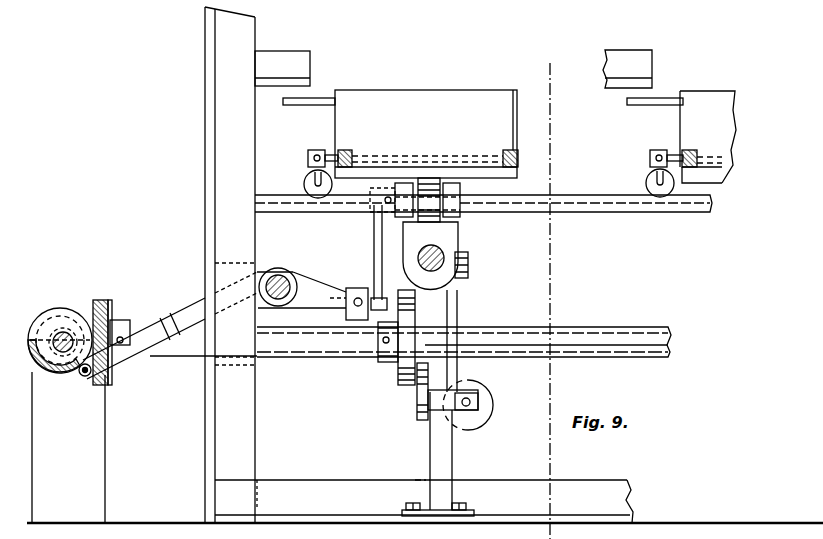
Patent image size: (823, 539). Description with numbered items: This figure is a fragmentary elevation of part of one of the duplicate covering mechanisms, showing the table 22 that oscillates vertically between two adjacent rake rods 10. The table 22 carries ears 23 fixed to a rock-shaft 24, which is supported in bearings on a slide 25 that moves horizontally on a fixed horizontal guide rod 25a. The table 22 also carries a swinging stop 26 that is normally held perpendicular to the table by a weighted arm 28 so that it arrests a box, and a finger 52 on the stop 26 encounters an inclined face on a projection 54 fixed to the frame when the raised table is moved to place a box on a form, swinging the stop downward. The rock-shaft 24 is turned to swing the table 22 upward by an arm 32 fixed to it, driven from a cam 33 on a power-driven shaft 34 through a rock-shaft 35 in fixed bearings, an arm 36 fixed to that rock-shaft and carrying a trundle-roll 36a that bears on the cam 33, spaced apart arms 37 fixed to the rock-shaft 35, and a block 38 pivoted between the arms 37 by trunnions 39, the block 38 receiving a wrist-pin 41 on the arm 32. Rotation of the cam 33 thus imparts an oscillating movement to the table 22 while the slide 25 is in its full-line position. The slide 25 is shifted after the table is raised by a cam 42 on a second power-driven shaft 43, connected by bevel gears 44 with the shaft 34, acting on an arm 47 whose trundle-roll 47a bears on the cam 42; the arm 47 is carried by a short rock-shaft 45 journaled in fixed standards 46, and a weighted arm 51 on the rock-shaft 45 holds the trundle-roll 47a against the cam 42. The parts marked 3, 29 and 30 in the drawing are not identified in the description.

The frame column 3 is at (425, 273).
The rake rods 10 is at (523, 63).
The table 22 is at (517, 176).
The ears 23 is at (457, 215).
The rock-shaft 24 is at (613, 204).
The slide 25 is at (450, 240).
The horizontal guide rod 25a is at (431, 271).
The swinging stop 26 is at (720, 97).
The weighted arm 28 is at (311, 192).
The nut 29 is at (465, 280).
The base member 30 is at (182, 536).
The arm 32 is at (373, 235).
The cam 33 is at (56, 298).
The power-driven shaft 34 is at (63, 355).
The rock-shaft 35 is at (276, 275).
The arm 36 is at (145, 347).
The trundle-roll 36a is at (83, 378).
The spaced apart arms 37 is at (308, 283).
The block 38 is at (357, 287).
The trunnions 39 is at (356, 307).
The wrist-pin 41 is at (375, 298).
The cam 42 is at (405, 340).
The power-driven shaft 43 is at (607, 335).
The bevel gears 44 is at (91, 312).
The short rock-shaft 45 is at (422, 398).
The fixed standards 46 is at (443, 467).
The arm 47 is at (420, 390).
The trundle-roll 47a is at (400, 385).
The weighted arm 51 is at (494, 406).
The finger 52 is at (318, 106).
The projection 54 is at (300, 63).